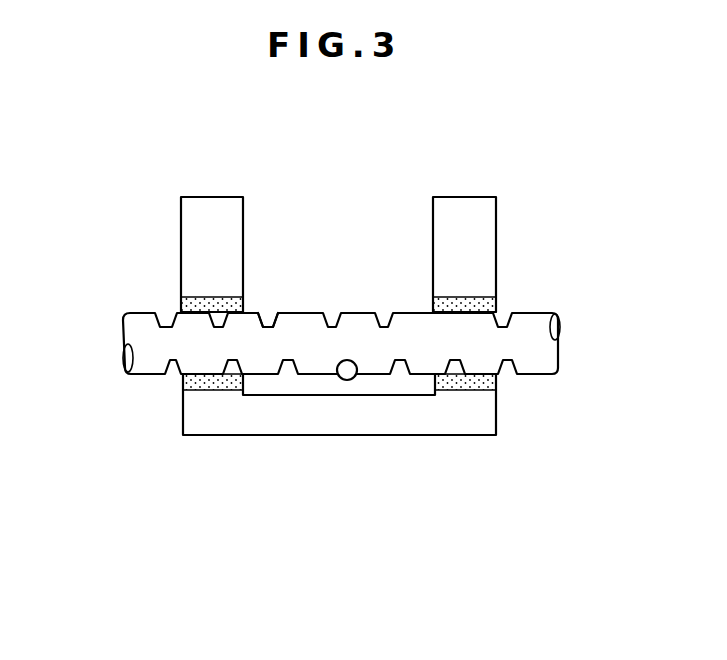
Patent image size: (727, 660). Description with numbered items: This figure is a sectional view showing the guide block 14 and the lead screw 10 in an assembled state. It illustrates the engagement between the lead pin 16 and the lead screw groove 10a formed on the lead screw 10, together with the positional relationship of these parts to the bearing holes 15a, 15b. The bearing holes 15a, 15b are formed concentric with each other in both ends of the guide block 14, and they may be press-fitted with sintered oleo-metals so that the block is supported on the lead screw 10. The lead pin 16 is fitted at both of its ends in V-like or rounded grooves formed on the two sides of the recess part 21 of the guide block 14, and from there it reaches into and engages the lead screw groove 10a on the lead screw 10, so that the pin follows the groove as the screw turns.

The lead screw 10 is at (538, 365).
The lead screw groove 10a is at (273, 312).
The guide block 14 is at (203, 197).
The bearing hole 15a is at (181, 302).
The bearing hole 15b is at (545, 285).
The lead pin 16 is at (349, 380).
The recess part 21 is at (288, 378).